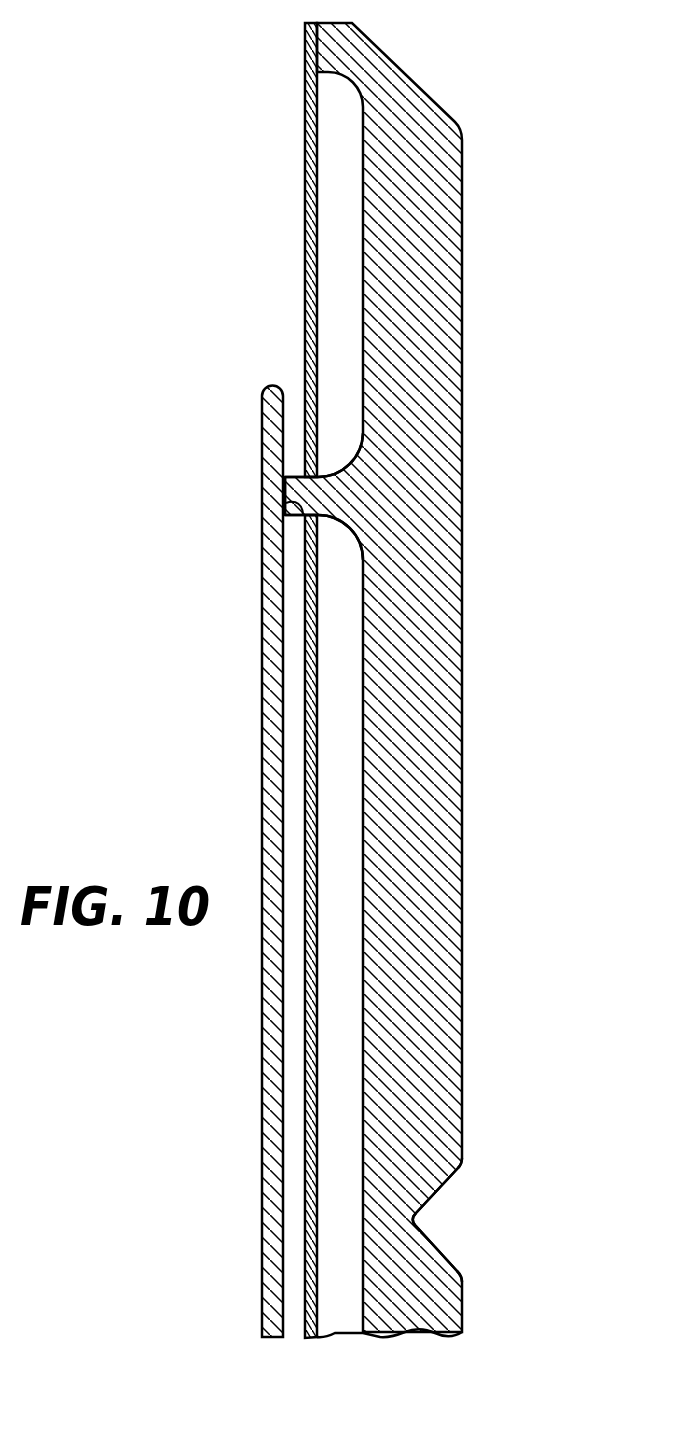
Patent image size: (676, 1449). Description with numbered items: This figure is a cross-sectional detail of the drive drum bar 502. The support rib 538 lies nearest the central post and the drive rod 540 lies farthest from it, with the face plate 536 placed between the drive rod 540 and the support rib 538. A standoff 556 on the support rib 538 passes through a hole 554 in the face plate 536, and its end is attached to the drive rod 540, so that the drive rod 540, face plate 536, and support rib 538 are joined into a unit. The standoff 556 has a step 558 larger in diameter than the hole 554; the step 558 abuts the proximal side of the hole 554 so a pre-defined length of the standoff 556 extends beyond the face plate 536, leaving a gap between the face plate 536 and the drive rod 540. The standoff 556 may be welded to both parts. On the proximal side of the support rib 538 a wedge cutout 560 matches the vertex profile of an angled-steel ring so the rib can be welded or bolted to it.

The housing assembly 502 is at (166, 183).
The face plate 536 is at (304, 138).
The support rib 538 is at (462, 172).
The drive rod 540 is at (262, 693).
The hole 554 is at (292, 502).
The standoff 556 is at (285, 485).
The step 558 is at (308, 516).
The wedge cutout 560 is at (452, 1186).